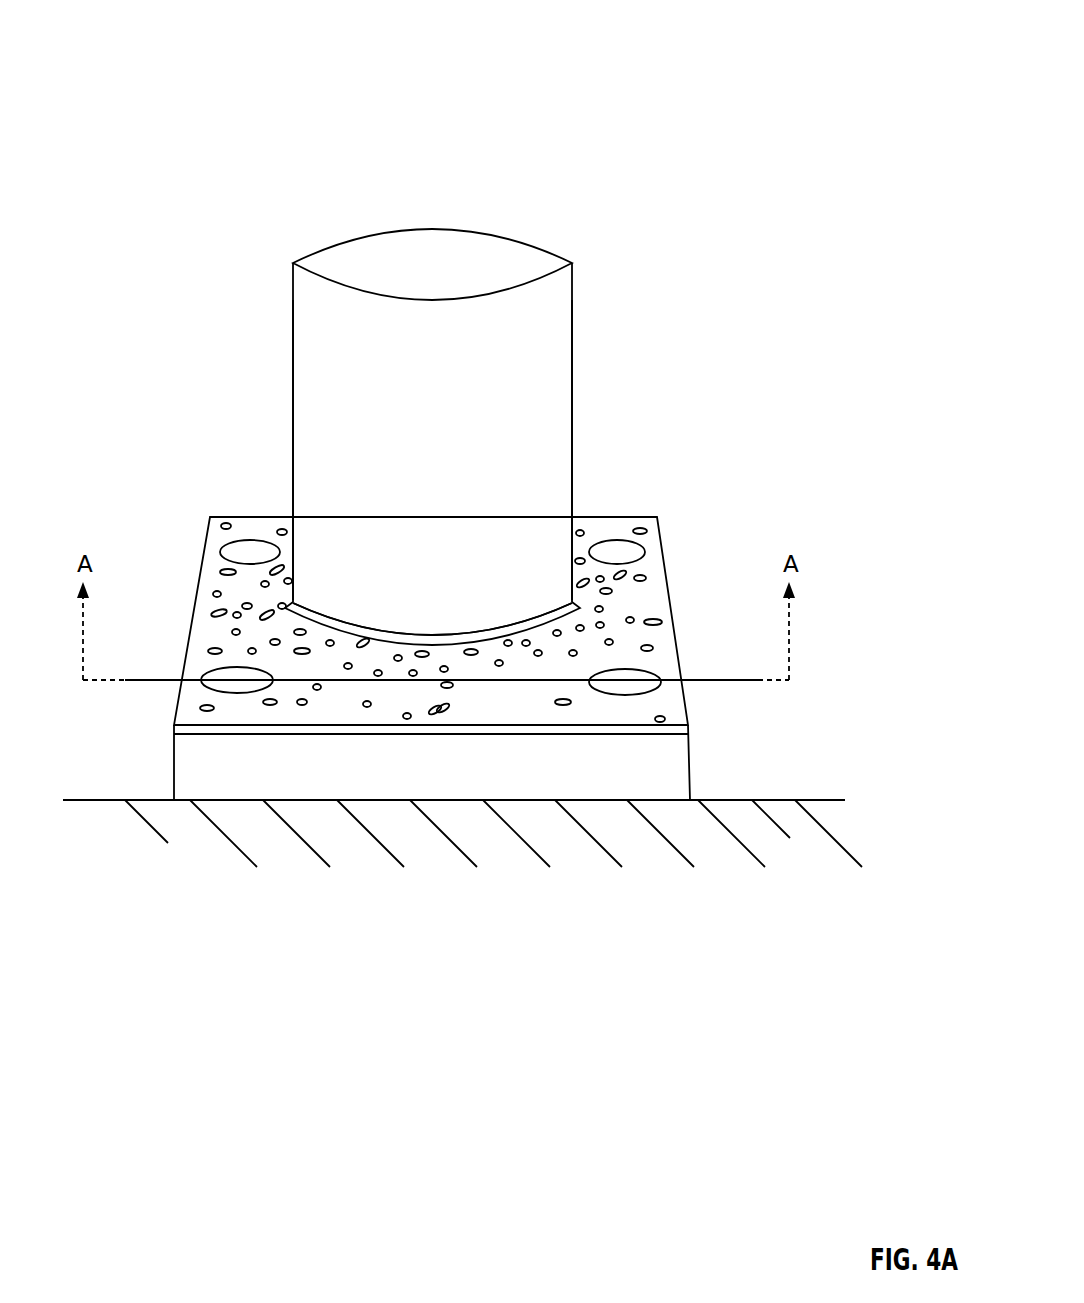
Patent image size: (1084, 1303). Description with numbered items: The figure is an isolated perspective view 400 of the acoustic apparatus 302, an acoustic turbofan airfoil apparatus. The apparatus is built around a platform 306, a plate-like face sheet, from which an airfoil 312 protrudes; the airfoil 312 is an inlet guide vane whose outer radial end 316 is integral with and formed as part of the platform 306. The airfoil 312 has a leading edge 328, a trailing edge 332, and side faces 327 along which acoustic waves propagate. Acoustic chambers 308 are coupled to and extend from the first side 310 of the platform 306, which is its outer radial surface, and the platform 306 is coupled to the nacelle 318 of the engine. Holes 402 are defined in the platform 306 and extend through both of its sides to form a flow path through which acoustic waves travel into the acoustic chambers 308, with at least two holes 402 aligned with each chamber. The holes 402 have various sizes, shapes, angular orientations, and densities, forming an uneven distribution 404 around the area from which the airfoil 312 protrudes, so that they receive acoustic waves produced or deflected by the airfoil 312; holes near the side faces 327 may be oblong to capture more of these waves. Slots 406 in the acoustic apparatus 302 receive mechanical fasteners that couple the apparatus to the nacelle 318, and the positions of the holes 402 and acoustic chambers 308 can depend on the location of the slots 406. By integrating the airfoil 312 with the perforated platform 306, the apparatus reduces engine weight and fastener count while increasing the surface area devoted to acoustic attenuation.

The isolated perspective view 400 is at (707, 35).
The acoustic apparatus 302 is at (580, 193).
The airfoil 312 is at (293, 303).
The leading edge 328 is at (293, 355).
The trailing edge 332 is at (572, 383).
The side faces 327 is at (545, 455).
The outer radial end 316 is at (260, 523).
The platform 306 is at (658, 527).
The slots 406 is at (227, 551).
The holes 402 is at (212, 615).
The uneven distribution 404 is at (588, 645).
The first side 310 is at (675, 733).
The acoustic chambers 308 is at (200, 775).
The nacelle 318 is at (105, 800).